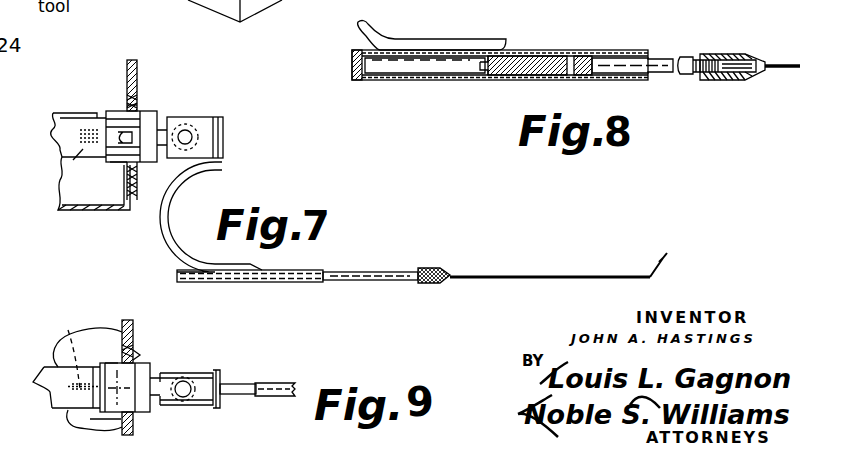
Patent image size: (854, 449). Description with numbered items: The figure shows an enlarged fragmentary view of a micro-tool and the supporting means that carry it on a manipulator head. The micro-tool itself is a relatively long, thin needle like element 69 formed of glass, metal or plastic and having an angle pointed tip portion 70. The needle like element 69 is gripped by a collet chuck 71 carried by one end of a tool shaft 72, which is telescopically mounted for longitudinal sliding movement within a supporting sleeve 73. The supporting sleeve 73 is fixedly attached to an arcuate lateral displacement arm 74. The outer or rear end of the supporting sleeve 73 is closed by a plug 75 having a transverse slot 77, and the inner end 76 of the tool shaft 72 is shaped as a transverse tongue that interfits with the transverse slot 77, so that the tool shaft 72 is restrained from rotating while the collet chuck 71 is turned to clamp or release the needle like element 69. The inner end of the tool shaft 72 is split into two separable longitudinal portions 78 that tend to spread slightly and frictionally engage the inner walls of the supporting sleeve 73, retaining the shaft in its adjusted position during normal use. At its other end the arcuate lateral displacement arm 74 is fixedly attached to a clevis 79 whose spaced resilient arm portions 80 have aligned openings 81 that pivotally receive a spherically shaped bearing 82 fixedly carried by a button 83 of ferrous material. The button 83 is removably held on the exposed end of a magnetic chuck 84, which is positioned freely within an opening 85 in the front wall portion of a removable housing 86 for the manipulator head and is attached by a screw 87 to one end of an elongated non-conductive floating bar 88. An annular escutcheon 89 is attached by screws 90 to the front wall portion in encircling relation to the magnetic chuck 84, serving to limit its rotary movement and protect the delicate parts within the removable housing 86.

In FIG. 7, the needle like element 69 is at (568, 276).
In FIG. 8, the needle like element 69 is at (780, 63).
In FIG. 7, the angle pointed tip portion 70 is at (662, 252).
In FIG. 7, the collet chuck 71 is at (430, 268).
In FIG. 8, the collet chuck 71 is at (708, 53).
In FIG. 7, the tool shaft 72 is at (379, 272).
In FIG. 8, the tool shaft 72 is at (606, 56).
In FIG. 7, the supporting sleeve 73 is at (286, 270).
In FIG. 8, the supporting sleeve 73 is at (542, 50).
In FIG. 9, the supporting sleeve 73 is at (280, 383).
In FIG. 7, the arcuate lateral displacement arm 74 is at (162, 238).
In FIG. 8, the arcuate lateral displacement arm 74 is at (416, 45).
In FIG. 9, the arcuate lateral displacement arm 74 is at (242, 395).
In FIG. 8, the plug 75 is at (352, 58).
In FIG. 8, the inner end 76 is at (481, 70).
In FIG. 8, the transverse slot 77 is at (352, 66).
In FIG. 8, the separable longitudinal portions 78 is at (510, 75).
In FIG. 7, the clevis 79 is at (224, 112).
In FIG. 9, the clevis 79 is at (219, 370).
In FIG. 7, the resilient arm portions 80 is at (203, 117).
In FIG. 9, the resilient arm portions 80 is at (200, 373).
In FIG. 7, the aligned openings 81 is at (182, 130).
In FIG. 9, the aligned openings 81 is at (179, 382).
In FIG. 7, the spherically shaped bearing 82 is at (187, 126).
In FIG. 9, the spherically shaped bearing 82 is at (184, 377).
In FIG. 7, the button 83 is at (150, 111).
In FIG. 9, the button 83 is at (151, 363).
In FIG. 7, the magnetic chuck 84 is at (117, 179).
In FIG. 9, the magnetic chuck 84 is at (113, 351).
In FIG. 7, the opening 85 is at (127, 107).
In FIG. 9, the opening 85 is at (95, 424).
In FIG. 7, the removable housing 86 is at (134, 60).
In FIG. 9, the removable housing 86 is at (128, 320).
In FIG. 7, the screw 87 is at (60, 174).
In FIG. 9, the screw 87 is at (70, 340).
In FIG. 7, the floating bar 88 is at (55, 126).
In FIG. 9, the floating bar 88 is at (55, 390).
In FIG. 7, the annular escutcheon 89 is at (137, 100).
In FIG. 9, the annular escutcheon 89 is at (135, 345).
In FIG. 7, the screws 90 is at (139, 197).
In FIG. 9, the screws 90 is at (138, 358).